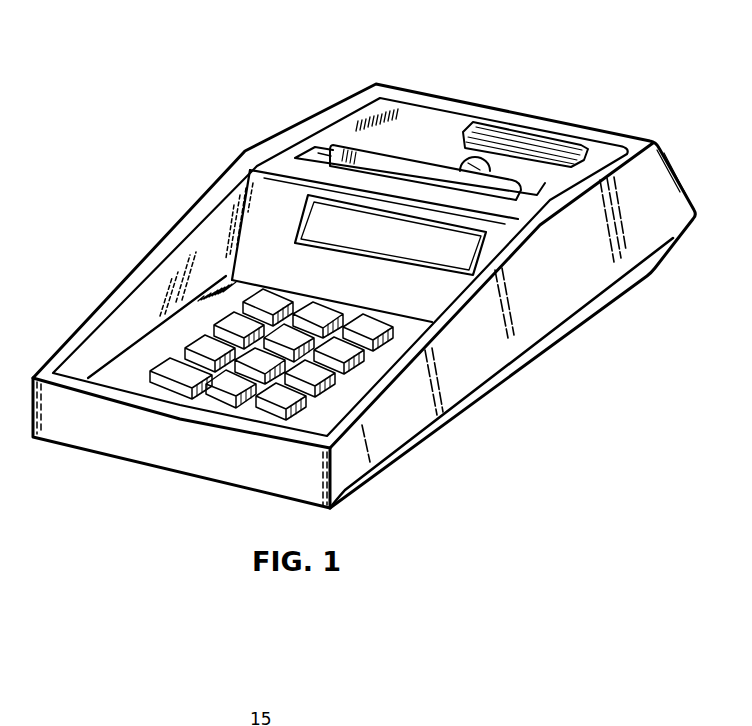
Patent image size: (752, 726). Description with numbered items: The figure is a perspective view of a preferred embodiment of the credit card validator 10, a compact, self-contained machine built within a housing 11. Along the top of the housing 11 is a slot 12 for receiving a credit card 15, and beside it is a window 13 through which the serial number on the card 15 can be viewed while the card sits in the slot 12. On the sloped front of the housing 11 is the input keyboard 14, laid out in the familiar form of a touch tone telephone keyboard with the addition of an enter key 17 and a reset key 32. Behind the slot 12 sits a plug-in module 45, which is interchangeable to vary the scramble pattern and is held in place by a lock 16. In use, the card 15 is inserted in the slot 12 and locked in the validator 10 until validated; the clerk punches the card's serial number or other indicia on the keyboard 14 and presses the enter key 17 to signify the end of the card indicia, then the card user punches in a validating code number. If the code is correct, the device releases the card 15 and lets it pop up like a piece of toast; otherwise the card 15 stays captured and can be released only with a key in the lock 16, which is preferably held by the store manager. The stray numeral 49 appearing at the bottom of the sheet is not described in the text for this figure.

The credit card validator 10 is at (304, 90).
The housing 11 is at (672, 189).
The slot 12 is at (310, 152).
The window 13 is at (478, 238).
The input keyboard 14 is at (240, 283).
The credit card 15 is at (408, 167).
The lock 16 is at (474, 162).
The enter key 17 is at (178, 354).
The reset key 32 is at (302, 410).
The plug-in module 45 is at (528, 152).
The reference numeral 49 is at (435, 717).